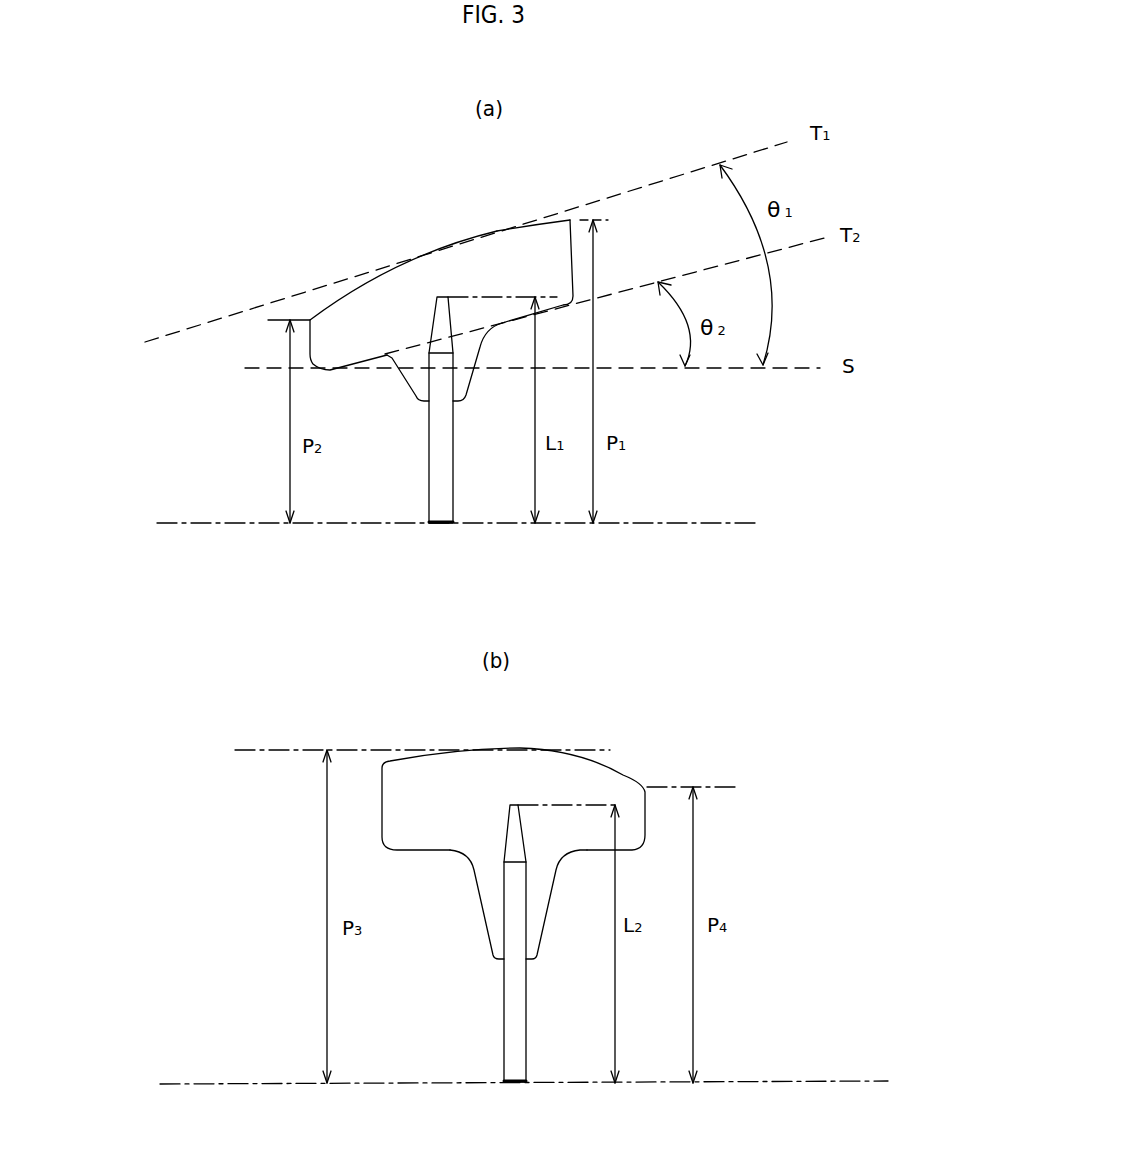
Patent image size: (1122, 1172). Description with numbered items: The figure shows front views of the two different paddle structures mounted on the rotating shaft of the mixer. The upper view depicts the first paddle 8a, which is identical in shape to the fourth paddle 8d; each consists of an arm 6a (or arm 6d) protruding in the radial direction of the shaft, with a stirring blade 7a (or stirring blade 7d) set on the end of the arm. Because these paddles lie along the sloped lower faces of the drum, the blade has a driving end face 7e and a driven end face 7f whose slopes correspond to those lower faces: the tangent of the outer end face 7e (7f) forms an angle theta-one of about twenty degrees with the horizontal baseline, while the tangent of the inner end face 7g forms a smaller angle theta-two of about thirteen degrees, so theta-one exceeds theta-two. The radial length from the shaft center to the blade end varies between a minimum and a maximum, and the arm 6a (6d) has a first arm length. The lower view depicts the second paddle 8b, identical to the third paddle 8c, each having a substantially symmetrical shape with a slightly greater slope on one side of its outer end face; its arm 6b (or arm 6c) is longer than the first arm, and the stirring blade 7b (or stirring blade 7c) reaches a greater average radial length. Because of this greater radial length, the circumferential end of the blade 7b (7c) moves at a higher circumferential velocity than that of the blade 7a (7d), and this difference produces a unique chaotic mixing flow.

The stirring blade 7a is at (476, 263).
The stirring blade 7d is at (476, 263).
The driving end face 7e is at (570, 193).
The driven end face 7f is at (532, 220).
The inner end face 7g is at (542, 312).
The arm 6a is at (401, 410).
The arm 6d is at (442, 420).
The first paddle 8a is at (456, 407).
The fourth paddle 8d is at (475, 397).
The stirring blade 7b is at (545, 790).
The stirring blade 7c is at (558, 768).
The arm 6b is at (473, 943).
The arm 6c is at (515, 980).
The second paddle 8b is at (530, 948).
The third paddle 8c is at (545, 947).